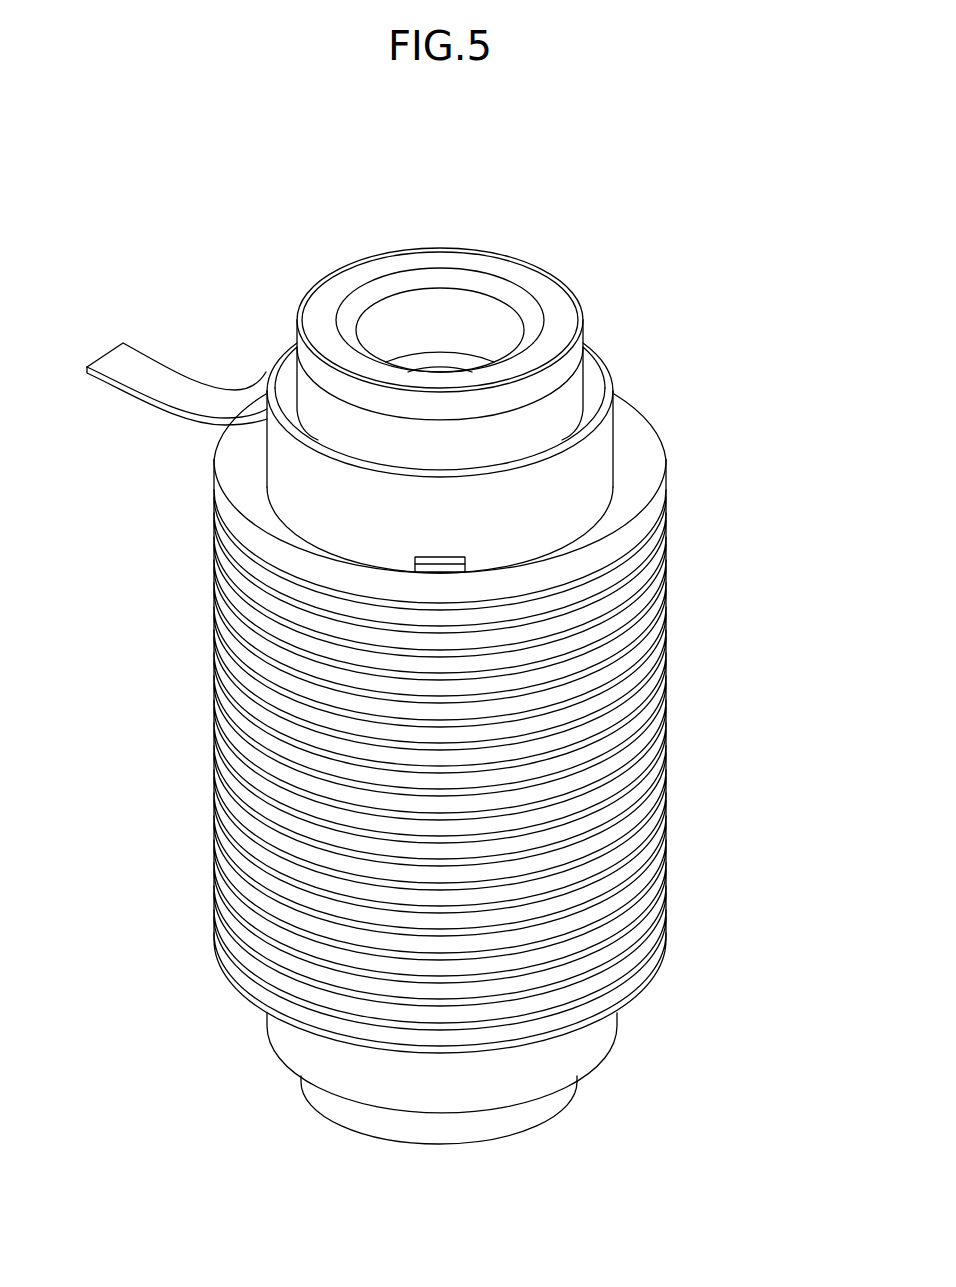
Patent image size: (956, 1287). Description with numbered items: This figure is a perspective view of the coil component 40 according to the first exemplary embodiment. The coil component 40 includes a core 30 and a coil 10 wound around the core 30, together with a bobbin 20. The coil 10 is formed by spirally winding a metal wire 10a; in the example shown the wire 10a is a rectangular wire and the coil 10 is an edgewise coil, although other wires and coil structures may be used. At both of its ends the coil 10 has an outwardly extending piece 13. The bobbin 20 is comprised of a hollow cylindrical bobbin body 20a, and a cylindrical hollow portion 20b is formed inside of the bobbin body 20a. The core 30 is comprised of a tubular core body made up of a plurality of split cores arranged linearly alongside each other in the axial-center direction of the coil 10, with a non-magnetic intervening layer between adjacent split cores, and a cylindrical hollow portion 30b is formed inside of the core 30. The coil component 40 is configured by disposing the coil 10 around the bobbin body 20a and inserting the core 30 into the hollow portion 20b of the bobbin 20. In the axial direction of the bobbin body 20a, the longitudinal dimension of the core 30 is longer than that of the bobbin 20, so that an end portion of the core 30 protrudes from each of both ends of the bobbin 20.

The coil component 40 is at (453, 123).
The coil 10 is at (250, 520).
The wire 10a is at (638, 497).
The outwardly extending piece 13 is at (138, 360).
The bobbin 20 is at (282, 445).
The bobbin body 20a is at (598, 440).
The hollow portion 20b is at (288, 380).
The core 30 is at (445, 257).
The hollow portion 30b is at (403, 323).